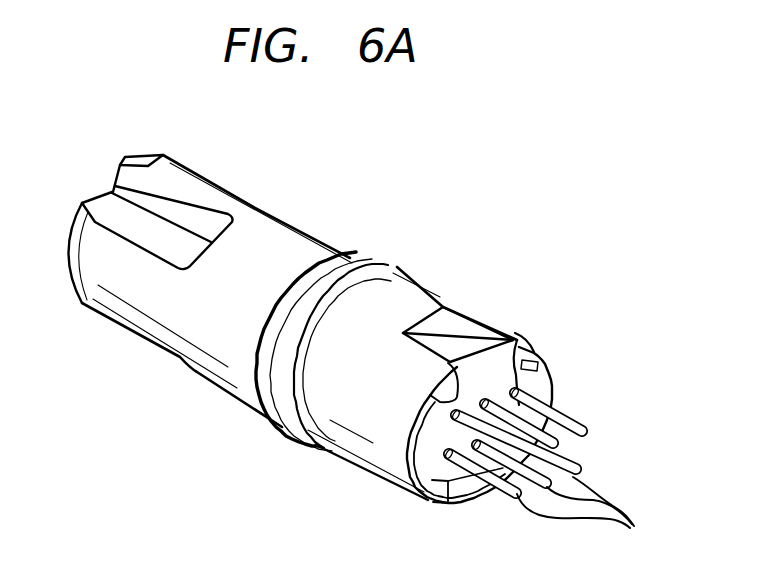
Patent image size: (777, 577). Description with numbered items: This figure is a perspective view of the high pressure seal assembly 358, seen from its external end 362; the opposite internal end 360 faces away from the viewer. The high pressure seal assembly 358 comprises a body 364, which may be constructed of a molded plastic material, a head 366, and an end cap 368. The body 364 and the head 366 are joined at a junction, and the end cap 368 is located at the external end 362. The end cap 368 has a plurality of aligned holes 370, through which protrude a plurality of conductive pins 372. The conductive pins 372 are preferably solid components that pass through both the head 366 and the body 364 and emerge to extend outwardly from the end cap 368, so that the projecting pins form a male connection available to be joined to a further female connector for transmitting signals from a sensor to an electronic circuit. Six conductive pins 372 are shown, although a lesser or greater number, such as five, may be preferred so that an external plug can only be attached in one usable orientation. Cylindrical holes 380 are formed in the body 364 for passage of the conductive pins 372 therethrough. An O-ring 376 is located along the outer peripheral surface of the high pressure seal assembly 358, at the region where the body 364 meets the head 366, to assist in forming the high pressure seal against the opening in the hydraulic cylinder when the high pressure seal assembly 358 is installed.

The high pressure seal assembly 358 is at (285, 168).
The internal end 360 is at (122, 158).
The external end 362 is at (552, 388).
The body 364 is at (420, 298).
The head 366 is at (121, 328).
The end cap 368 is at (440, 475).
The aligned holes 370 is at (517, 343).
The conductive pins 372 is at (592, 520).
The O-ring 376 is at (362, 258).
The cylindrical holes 380 is at (284, 420).